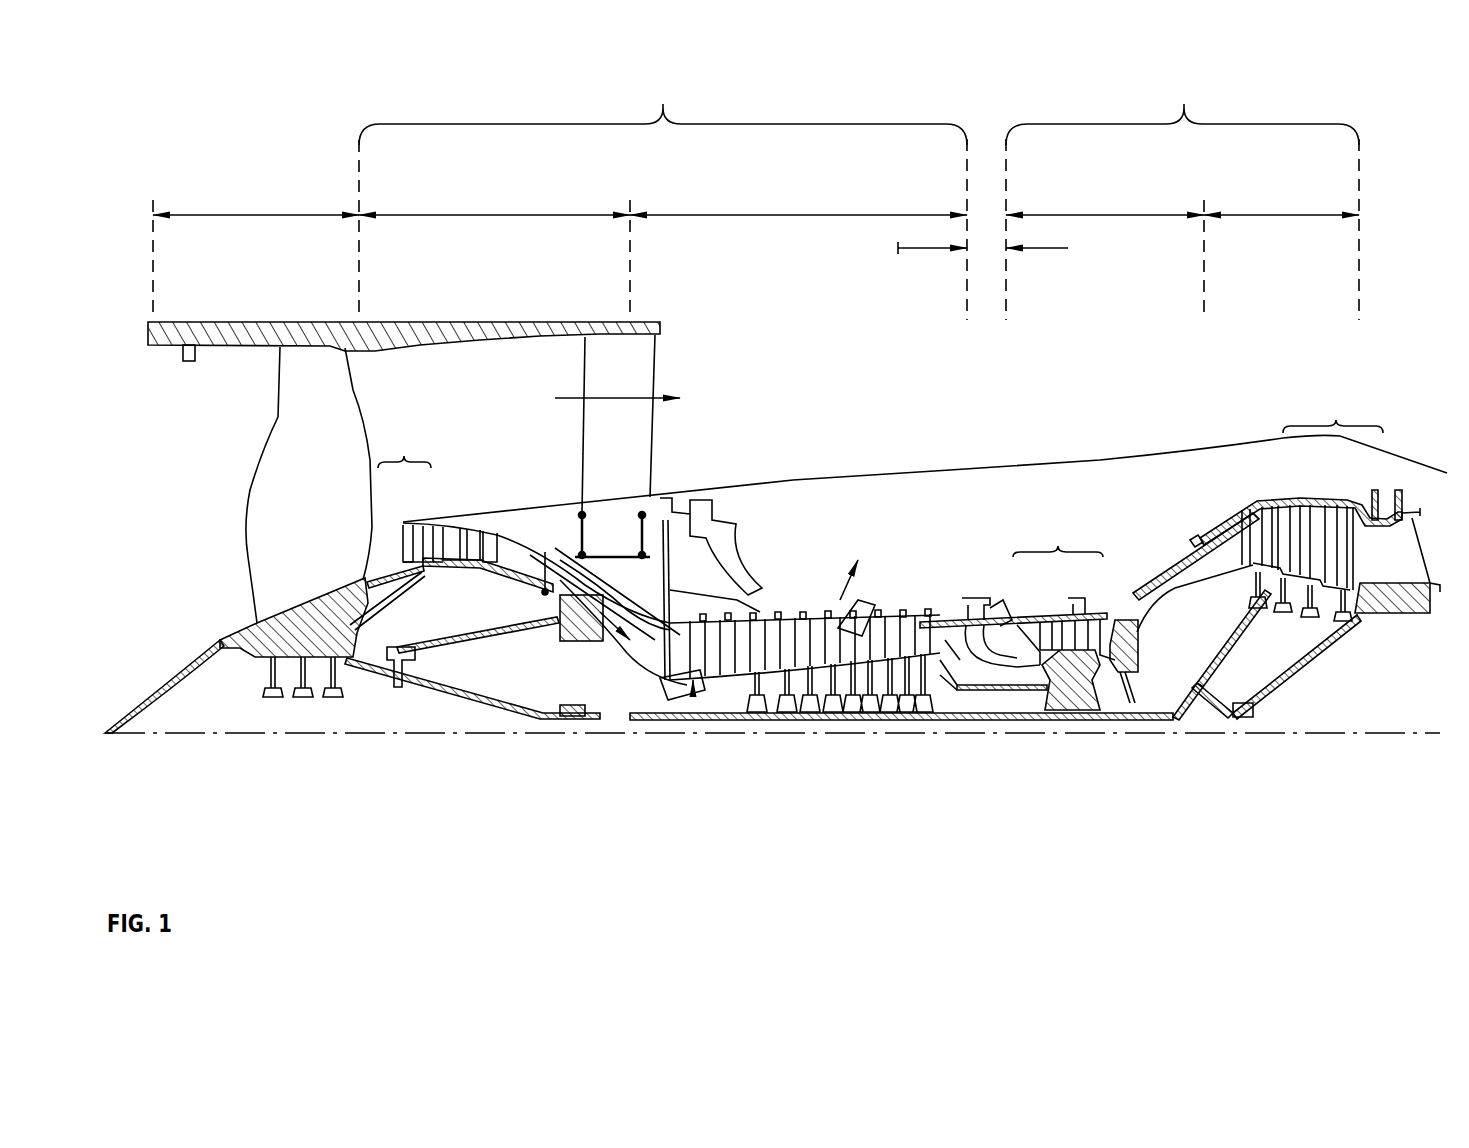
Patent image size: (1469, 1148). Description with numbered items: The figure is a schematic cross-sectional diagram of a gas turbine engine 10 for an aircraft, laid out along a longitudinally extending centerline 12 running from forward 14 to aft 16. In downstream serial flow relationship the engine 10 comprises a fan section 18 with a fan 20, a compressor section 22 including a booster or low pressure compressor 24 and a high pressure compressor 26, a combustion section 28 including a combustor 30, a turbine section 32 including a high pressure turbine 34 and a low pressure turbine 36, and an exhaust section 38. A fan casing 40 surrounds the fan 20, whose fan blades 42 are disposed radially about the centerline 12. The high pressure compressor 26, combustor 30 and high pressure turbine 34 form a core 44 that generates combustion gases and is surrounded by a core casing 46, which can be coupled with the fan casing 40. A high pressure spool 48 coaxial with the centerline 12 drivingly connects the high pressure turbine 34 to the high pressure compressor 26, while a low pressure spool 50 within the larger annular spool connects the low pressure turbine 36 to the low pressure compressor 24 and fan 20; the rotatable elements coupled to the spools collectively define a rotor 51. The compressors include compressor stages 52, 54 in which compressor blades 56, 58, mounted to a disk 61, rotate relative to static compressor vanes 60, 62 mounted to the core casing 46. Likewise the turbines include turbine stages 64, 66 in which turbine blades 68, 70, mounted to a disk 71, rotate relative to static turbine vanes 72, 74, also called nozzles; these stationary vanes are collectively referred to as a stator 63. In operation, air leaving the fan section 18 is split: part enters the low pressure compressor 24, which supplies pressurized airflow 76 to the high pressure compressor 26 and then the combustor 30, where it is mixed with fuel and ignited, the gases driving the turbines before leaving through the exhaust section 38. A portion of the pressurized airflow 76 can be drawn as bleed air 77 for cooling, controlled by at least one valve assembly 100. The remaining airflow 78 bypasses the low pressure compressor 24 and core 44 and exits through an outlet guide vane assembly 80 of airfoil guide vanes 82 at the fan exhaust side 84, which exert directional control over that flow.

The gas turbine engine 10 is at (1372, 245).
The centerline 12 is at (232, 735).
The forward 14 is at (172, 444).
The aft 16 is at (1445, 540).
The fan section 18 is at (257, 215).
The fan 20 is at (232, 580).
The compressor section 22 is at (663, 104).
The low pressure compressor 24 is at (493, 215).
The high pressure compressor 26 is at (798, 215).
The combustion section 28 is at (898, 252).
The combustor 30 is at (1003, 598).
The turbine section 32 is at (1184, 104).
The high pressure turbine 34 is at (1106, 215).
The low pressure turbine 36 is at (1280, 215).
The exhaust section 38 is at (1425, 530).
The fan casing 40 is at (393, 322).
The fan blades 42 is at (328, 396).
The core 44 is at (928, 508).
The core casing 46 is at (1187, 545).
The high pressure spool 48 is at (973, 690).
The low pressure spool 50 is at (560, 720).
The rotor 51 is at (832, 725).
The compressor stages of the LP compressor 52 is at (404, 456).
The compressor stages of the HP compressor 54 is at (800, 600).
The LP compressor blades 56 is at (445, 530).
The HP compressor blades 58 is at (735, 635).
The LP compressor static vanes 60 is at (420, 525).
The disk 61 is at (453, 568).
The HP compressor static vanes 62 is at (695, 640).
The stator 63 is at (693, 697).
The HP turbine stages 64 is at (1058, 546).
The LP turbine stages 66 is at (1336, 420).
The HP turbine blades 68 is at (1068, 620).
The LP turbine blades 70 is at (1345, 505).
The disk 71 is at (1070, 690).
The HP turbine static vanes 72 is at (1046, 620).
The LP turbine static vanes 74 is at (1325, 505).
The pressurized airflow 76 is at (603, 640).
The bleed air 77 is at (825, 585).
The bypass airflow 78 is at (560, 398).
The outlet guide vane assembly 80 is at (665, 455).
The airfoil guide vanes 82 is at (583, 440).
The fan exhaust side 84 is at (665, 370).
The valve assembly 100 is at (195, 357).